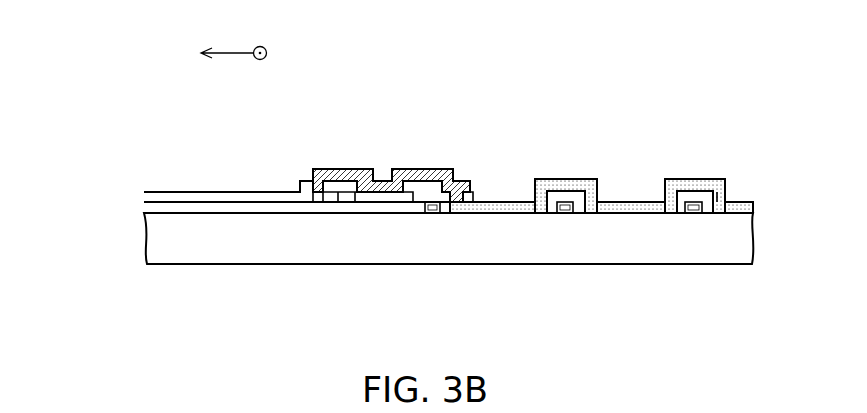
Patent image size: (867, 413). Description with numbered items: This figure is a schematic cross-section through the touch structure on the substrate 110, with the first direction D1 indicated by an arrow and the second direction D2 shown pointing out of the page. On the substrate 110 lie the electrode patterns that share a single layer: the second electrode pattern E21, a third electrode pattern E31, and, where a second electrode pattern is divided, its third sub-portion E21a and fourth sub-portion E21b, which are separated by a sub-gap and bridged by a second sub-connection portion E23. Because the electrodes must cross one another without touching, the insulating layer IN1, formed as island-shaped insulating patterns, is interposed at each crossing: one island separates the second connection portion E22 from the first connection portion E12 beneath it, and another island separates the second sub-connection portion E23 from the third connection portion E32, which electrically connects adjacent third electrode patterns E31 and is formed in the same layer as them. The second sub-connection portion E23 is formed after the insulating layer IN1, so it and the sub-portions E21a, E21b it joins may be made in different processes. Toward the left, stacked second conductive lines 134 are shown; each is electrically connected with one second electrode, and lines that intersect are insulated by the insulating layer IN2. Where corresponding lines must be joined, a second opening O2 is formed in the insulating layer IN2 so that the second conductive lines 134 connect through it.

The substrate 110 is at (163, 248).
The insulating layer IN1 is at (158, 208).
The insulating layer IN2 is at (157, 196).
The second conductive line 134 is at (362, 173).
The second opening O2 is at (319, 201).
The third electrode pattern E31 is at (433, 212).
The second electrode pattern E21 is at (494, 212).
The third sub-portion E21a is at (736, 208).
The fourth sub-portion E21b is at (630, 208).
The second connection portion E22 is at (566, 183).
The first connection portion E12 is at (566, 212).
The third connection portion E32 is at (693, 212).
The second sub-connection portion E23 is at (717, 194).
The first direction D1 is at (164, 55).
The second direction D2 is at (344, 67).